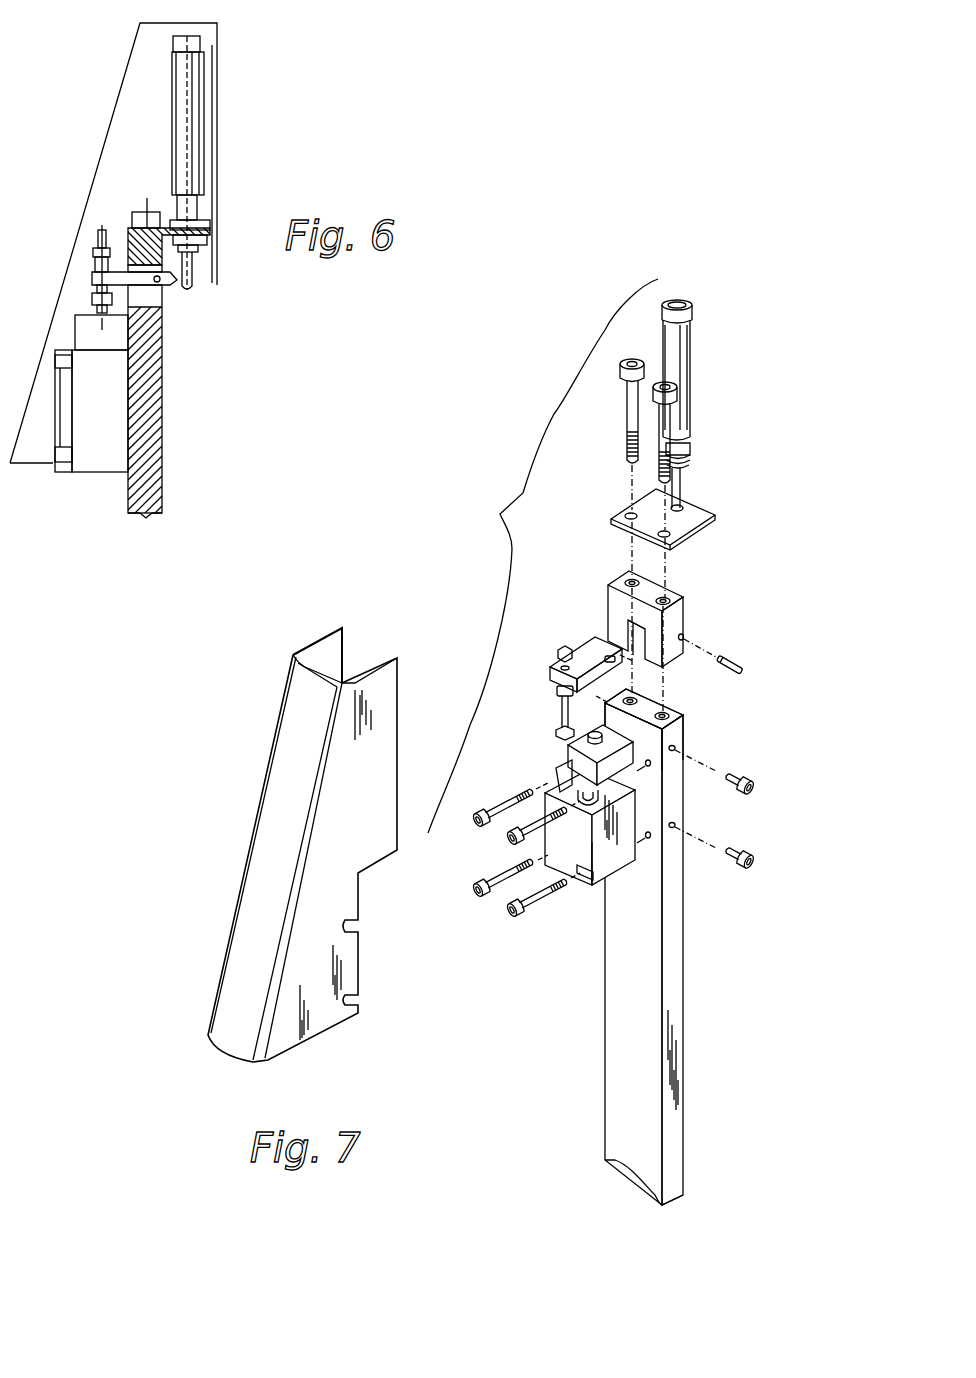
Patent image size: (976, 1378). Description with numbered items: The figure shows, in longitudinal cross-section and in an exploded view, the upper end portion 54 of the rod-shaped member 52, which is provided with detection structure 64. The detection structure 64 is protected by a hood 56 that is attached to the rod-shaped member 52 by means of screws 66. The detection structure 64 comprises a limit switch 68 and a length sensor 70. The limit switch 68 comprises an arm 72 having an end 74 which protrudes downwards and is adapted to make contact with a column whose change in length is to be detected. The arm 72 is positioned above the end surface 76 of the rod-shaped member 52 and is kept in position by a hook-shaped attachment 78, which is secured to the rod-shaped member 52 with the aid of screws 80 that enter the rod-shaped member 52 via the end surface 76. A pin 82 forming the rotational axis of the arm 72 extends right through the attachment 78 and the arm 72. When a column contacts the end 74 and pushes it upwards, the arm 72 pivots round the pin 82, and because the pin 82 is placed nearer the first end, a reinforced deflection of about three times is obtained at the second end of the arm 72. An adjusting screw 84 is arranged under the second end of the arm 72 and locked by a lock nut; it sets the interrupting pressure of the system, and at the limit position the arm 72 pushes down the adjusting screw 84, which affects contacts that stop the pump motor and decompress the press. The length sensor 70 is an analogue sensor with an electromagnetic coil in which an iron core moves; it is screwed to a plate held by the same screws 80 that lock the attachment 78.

In FIG. 6, the rod-shaped member 52 is at (163, 477).
In FIG. 7, the rod-shaped member 52 is at (633, 1150).
In FIG. 6, the upper end portion 54 is at (163, 368).
In FIG. 7, the upper end portion 54 is at (628, 1020).
In FIG. 6, the hood 56 is at (118, 130).
In FIG. 7, the hood 56 is at (268, 853).
In FIG. 7, the detection structure 64 is at (543, 556).
In FIG. 7, the screws 66 is at (715, 847).
In FIG. 6, the limit switch 68 is at (107, 437).
In FIG. 7, the limit switch 68 is at (567, 838).
In FIG. 6, the length sensor 70 is at (198, 162).
In FIG. 7, the length sensor 70 is at (687, 338).
In FIG. 6, the arm 72 is at (120, 277).
In FIG. 7, the arm 72 is at (595, 645).
In FIG. 6, the end 74 is at (163, 287).
In FIG. 7, the end surface 76 is at (677, 715).
In FIG. 7, the hook-shaped attachment 78 is at (677, 620).
In FIG. 7, the screws 80 is at (665, 423).
In FIG. 7, the pin 82 is at (718, 660).
In FIG. 7, the adjusting screw 84 is at (561, 718).